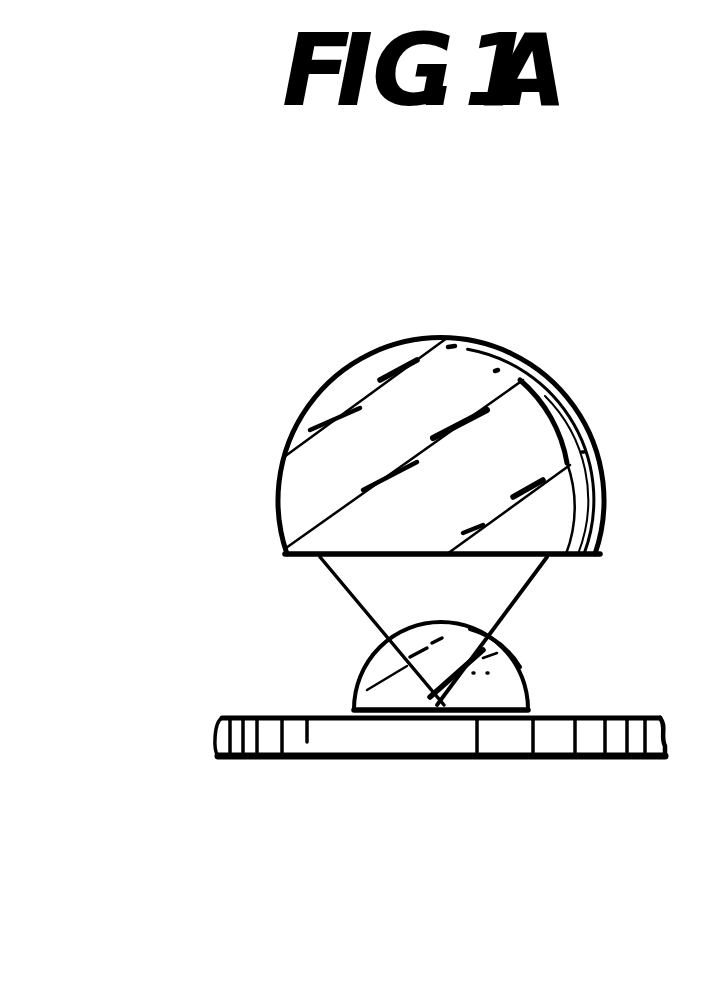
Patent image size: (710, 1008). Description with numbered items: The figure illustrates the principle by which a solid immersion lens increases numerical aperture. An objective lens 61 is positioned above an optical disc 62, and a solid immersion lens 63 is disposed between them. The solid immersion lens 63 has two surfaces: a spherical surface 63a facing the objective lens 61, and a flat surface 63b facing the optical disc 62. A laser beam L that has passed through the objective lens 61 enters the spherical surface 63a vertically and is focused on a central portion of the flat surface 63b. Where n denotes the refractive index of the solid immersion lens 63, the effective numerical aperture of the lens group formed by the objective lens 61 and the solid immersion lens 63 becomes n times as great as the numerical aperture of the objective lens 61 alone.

The objective lens 61 is at (335, 374).
The laser beam L is at (533, 583).
The solid immersion lens 63 is at (355, 691).
The spherical surface 63a is at (517, 660).
The flat surface 63b is at (547, 713).
The optical disc 62 is at (322, 758).